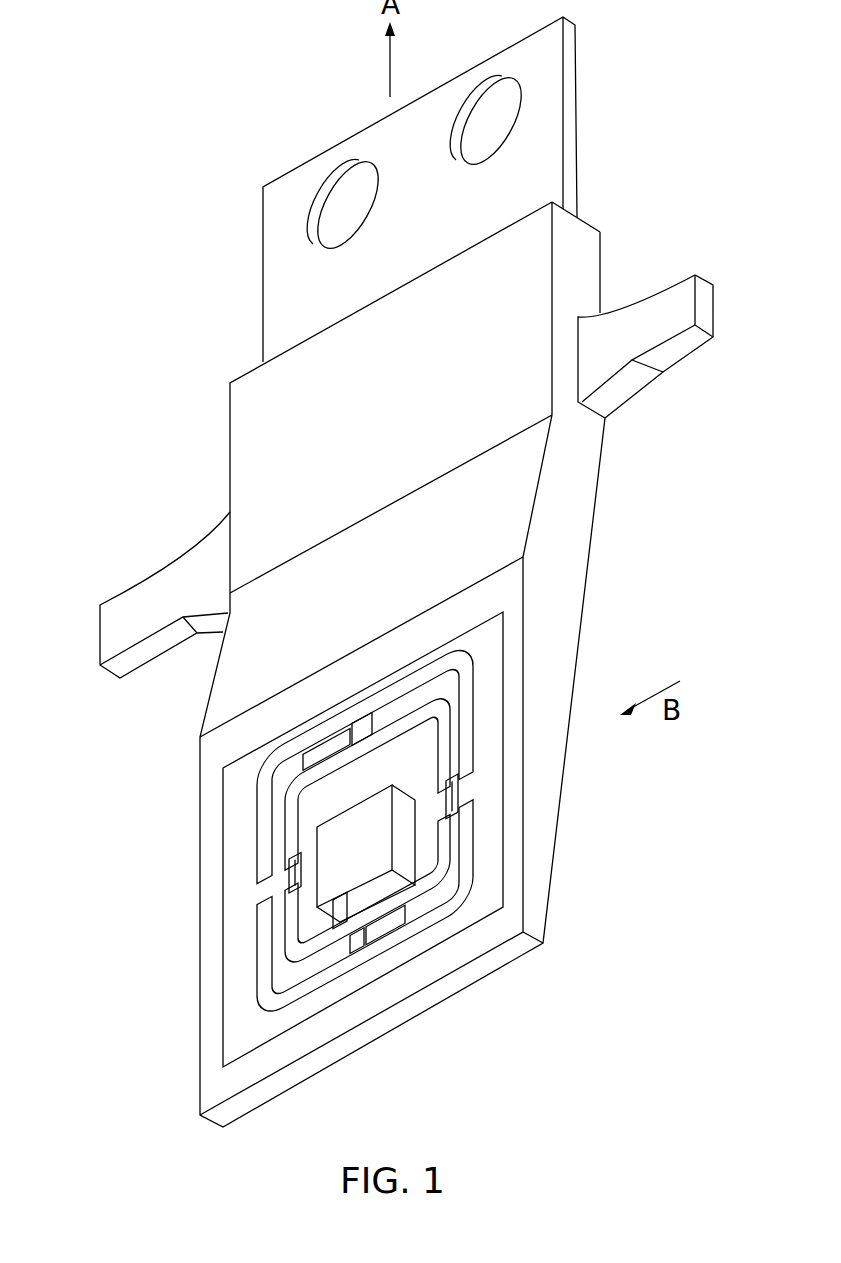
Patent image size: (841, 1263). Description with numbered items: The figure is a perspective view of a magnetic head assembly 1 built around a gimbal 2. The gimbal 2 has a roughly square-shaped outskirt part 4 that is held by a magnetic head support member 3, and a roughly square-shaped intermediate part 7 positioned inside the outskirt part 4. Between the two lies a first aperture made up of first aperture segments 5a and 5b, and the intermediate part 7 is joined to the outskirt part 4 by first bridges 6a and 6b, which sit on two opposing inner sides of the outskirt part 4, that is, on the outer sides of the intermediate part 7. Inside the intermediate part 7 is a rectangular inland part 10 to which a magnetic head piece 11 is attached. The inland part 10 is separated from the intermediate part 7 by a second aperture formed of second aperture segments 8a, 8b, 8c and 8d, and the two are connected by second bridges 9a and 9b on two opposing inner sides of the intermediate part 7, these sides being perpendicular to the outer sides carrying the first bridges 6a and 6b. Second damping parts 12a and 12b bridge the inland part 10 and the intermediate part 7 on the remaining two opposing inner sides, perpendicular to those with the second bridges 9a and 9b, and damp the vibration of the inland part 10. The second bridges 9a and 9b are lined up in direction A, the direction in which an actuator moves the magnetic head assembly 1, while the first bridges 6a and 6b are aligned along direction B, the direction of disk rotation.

The magnetic head assembly 1 is at (179, 364).
The gimbal 2 is at (248, 1015).
The magnetic head support member 3 is at (515, 503).
The outskirt part 4 is at (320, 1007).
The first aperture segment 5a is at (357, 953).
The first aperture segment 5b is at (323, 738).
The first bridge 6a is at (465, 778).
The first bridge 6b is at (270, 897).
The intermediate part 7 is at (337, 960).
The second aperture segment 8a is at (446, 712).
The second aperture segment 8b is at (437, 900).
The second aperture segment 8c is at (282, 958).
The second aperture segment 8d is at (292, 803).
The second bridge 9a is at (362, 747).
The second bridge 9b is at (353, 937).
The inland part 10 is at (427, 858).
The magnetic head piece 11 is at (338, 847).
The second damping part 12a is at (453, 783).
The second damping part 12b is at (290, 876).